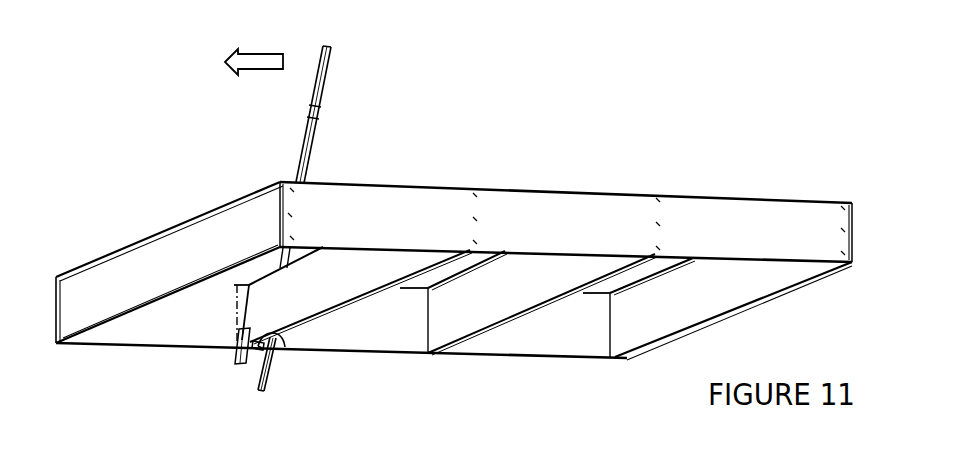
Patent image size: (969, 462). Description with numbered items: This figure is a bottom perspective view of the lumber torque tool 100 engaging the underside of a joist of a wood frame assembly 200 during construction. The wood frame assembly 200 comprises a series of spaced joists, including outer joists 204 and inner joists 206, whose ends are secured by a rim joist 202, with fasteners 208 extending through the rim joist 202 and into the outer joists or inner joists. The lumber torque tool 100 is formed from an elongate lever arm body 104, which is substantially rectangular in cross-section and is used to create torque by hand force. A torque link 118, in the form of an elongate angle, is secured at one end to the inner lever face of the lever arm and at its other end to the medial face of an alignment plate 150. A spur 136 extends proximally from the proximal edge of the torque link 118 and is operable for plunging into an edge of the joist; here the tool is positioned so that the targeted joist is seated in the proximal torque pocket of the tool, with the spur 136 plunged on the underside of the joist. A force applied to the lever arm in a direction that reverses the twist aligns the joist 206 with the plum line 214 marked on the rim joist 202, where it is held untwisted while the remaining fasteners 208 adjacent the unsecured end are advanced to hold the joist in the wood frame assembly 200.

The lumber torque tool 100 is at (341, 115).
The lever arm body 104 is at (266, 389).
The torque link 118 is at (257, 362).
The spur 136 is at (277, 332).
The alignment plate 150 is at (236, 360).
The wood frame assembly 200 is at (479, 247).
The rim joist 202 is at (554, 189).
The outer joists 204 is at (92, 262).
The inner joists 206 is at (354, 309).
The fasteners 208 is at (291, 213).
The plum line 214 is at (231, 311).